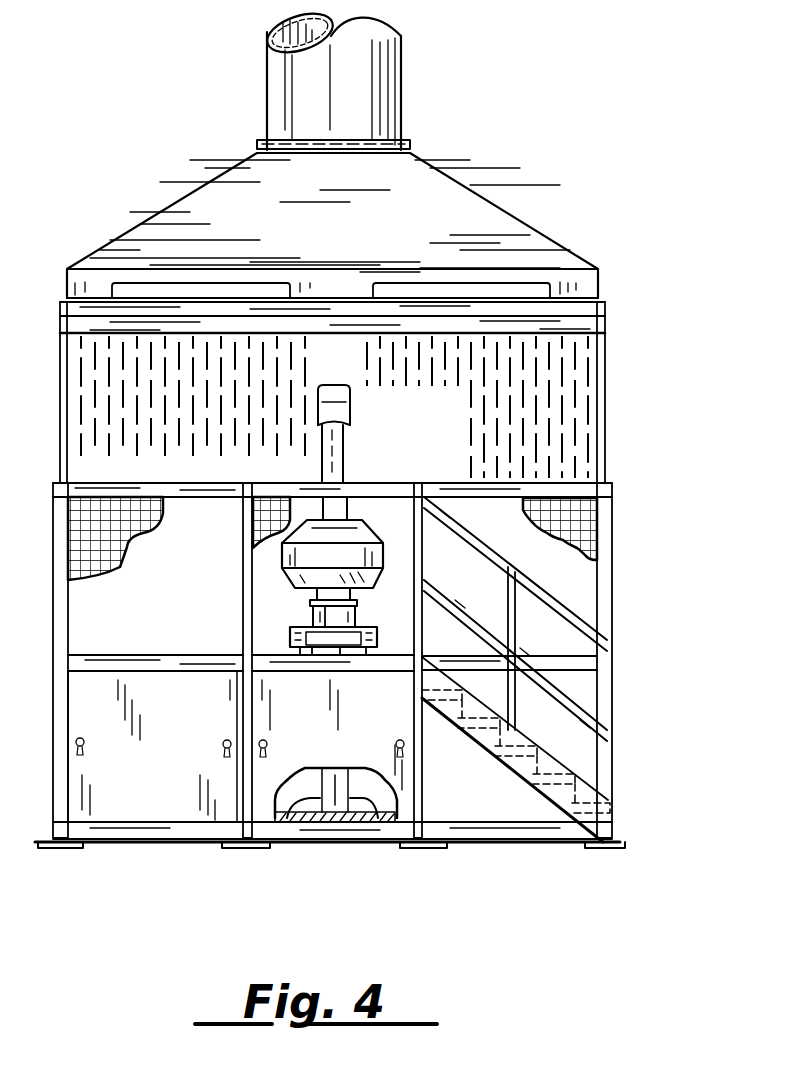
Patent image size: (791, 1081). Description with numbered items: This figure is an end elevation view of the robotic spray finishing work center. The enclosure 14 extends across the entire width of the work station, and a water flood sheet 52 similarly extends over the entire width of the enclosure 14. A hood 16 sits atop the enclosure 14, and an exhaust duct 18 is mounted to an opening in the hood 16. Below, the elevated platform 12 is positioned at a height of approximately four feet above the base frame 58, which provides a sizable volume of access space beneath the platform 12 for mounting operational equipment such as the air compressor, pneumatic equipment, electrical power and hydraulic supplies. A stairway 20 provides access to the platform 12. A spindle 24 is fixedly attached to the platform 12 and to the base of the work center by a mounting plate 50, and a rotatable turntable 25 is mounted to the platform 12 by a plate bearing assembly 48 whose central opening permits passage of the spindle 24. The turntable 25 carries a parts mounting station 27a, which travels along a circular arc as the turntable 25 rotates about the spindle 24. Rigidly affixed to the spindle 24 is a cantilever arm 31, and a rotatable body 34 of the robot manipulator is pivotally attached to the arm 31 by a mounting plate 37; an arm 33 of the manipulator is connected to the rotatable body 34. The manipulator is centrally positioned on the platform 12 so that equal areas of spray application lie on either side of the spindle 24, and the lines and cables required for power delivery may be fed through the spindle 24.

The elevated platform 12 is at (142, 655).
The enclosure 14 is at (605, 396).
The hood 16 is at (468, 192).
The exhaust duct 18 is at (402, 62).
The stairway 20 is at (524, 745).
The spindle 24 is at (300, 800).
The rotatable turntable 25 is at (378, 636).
The parts mounting station 27a is at (313, 616).
The cantilevered arm 31 is at (360, 611).
The arm 33 is at (345, 447).
The rotatable body 34 is at (345, 528).
The mounting plate 37 is at (317, 596).
The plate bearing assembly 48 is at (370, 650).
The mounting plate 50 is at (366, 800).
The water flood sheet 52 is at (555, 372).
The base frame 58 is at (182, 822).